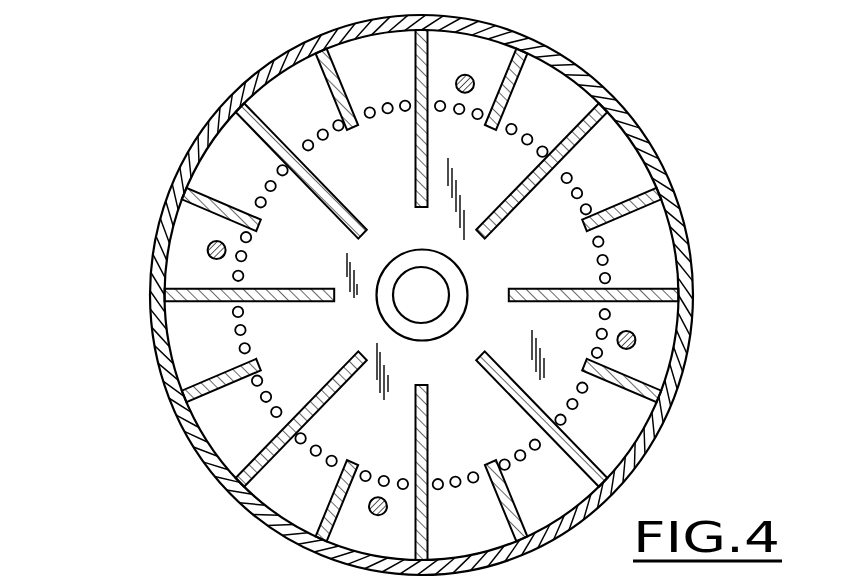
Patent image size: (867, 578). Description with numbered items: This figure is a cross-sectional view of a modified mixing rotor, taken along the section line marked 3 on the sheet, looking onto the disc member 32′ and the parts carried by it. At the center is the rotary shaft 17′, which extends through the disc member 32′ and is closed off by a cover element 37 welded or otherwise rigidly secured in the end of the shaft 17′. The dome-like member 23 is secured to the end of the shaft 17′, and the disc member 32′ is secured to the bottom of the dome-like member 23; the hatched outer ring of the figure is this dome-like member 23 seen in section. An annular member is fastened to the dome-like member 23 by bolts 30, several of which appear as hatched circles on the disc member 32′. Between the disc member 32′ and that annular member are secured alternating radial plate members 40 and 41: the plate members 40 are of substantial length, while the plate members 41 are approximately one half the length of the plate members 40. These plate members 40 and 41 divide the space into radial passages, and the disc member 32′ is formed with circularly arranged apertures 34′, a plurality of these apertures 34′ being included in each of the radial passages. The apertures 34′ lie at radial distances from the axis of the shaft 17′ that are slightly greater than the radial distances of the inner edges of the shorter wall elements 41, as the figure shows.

The dome-like member 23 is at (647, 152).
The disc member 32' is at (464, 295).
The rotary shaft 17' is at (448, 295).
The cover element 37 is at (433, 308).
The circularly arranged apertures 34' is at (421, 295).
The radial plate members 40 is at (320, 408).
The bolts 30 is at (385, 497).
The radial plate members 41 is at (340, 513).
The section line 3- 3 is at (115, 298).